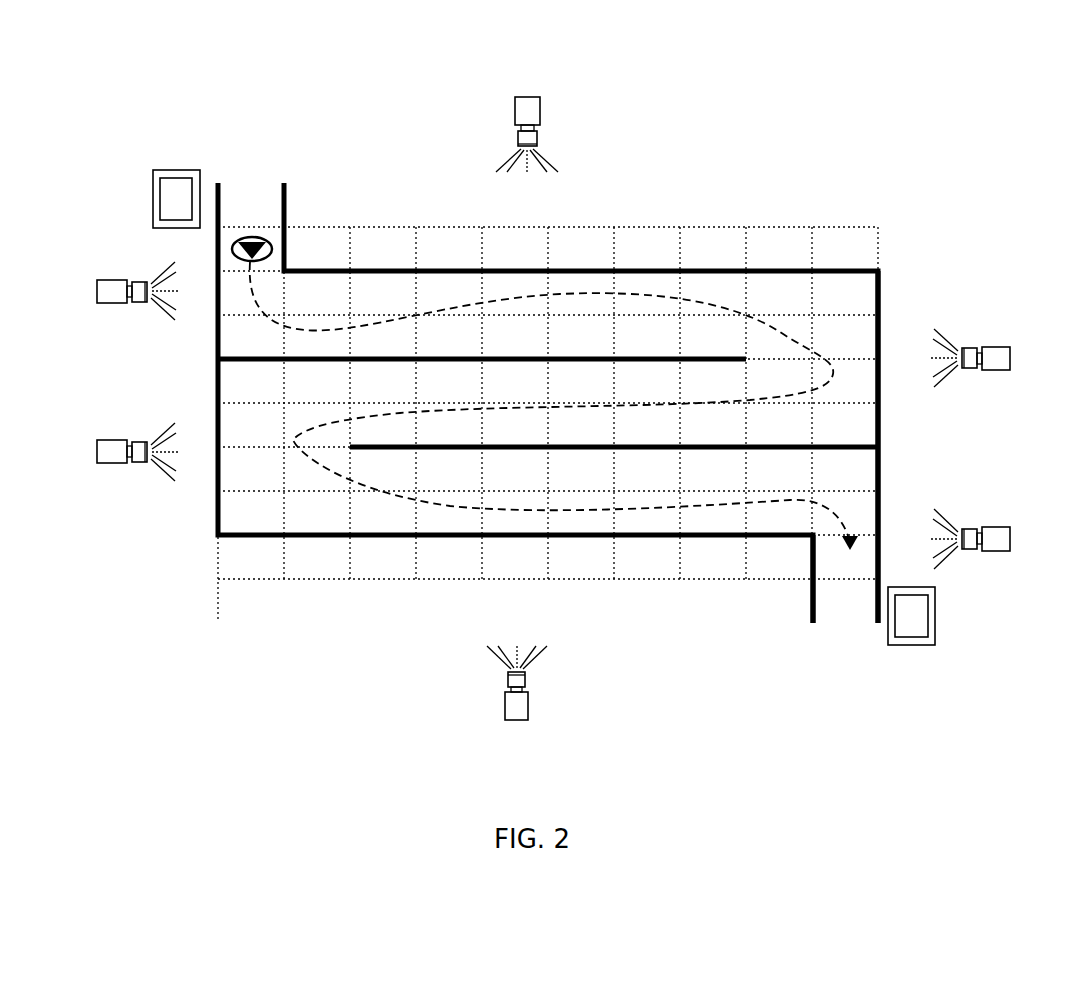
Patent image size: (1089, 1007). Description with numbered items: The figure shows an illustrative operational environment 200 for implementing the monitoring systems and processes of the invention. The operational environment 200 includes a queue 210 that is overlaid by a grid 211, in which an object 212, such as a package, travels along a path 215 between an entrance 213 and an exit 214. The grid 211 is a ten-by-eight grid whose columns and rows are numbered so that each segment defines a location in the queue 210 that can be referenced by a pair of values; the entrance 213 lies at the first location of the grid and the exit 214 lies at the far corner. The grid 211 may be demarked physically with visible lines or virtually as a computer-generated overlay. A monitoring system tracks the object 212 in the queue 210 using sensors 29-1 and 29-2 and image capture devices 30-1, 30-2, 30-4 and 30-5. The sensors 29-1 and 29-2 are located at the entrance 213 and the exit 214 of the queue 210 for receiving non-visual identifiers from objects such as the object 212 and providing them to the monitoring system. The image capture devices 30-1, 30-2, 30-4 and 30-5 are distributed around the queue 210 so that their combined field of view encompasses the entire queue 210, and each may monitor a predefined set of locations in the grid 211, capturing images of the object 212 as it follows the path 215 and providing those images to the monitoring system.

The operational environment 200 is at (394, 70).
The queue 210 is at (938, 431).
The grid 211 is at (614, 394).
The object 212 is at (294, 219).
The entrance 213 is at (268, 181).
The exit 214 is at (840, 618).
The path 215 is at (293, 440).
The sensor 29-1 is at (155, 177).
The sensor 29-2 is at (935, 607).
The image capture device 30-1 is at (102, 282).
The image capture device 30-2 is at (522, 102).
The image capture device 30-4 is at (103, 443).
The image capture device 30-5 is at (510, 718).